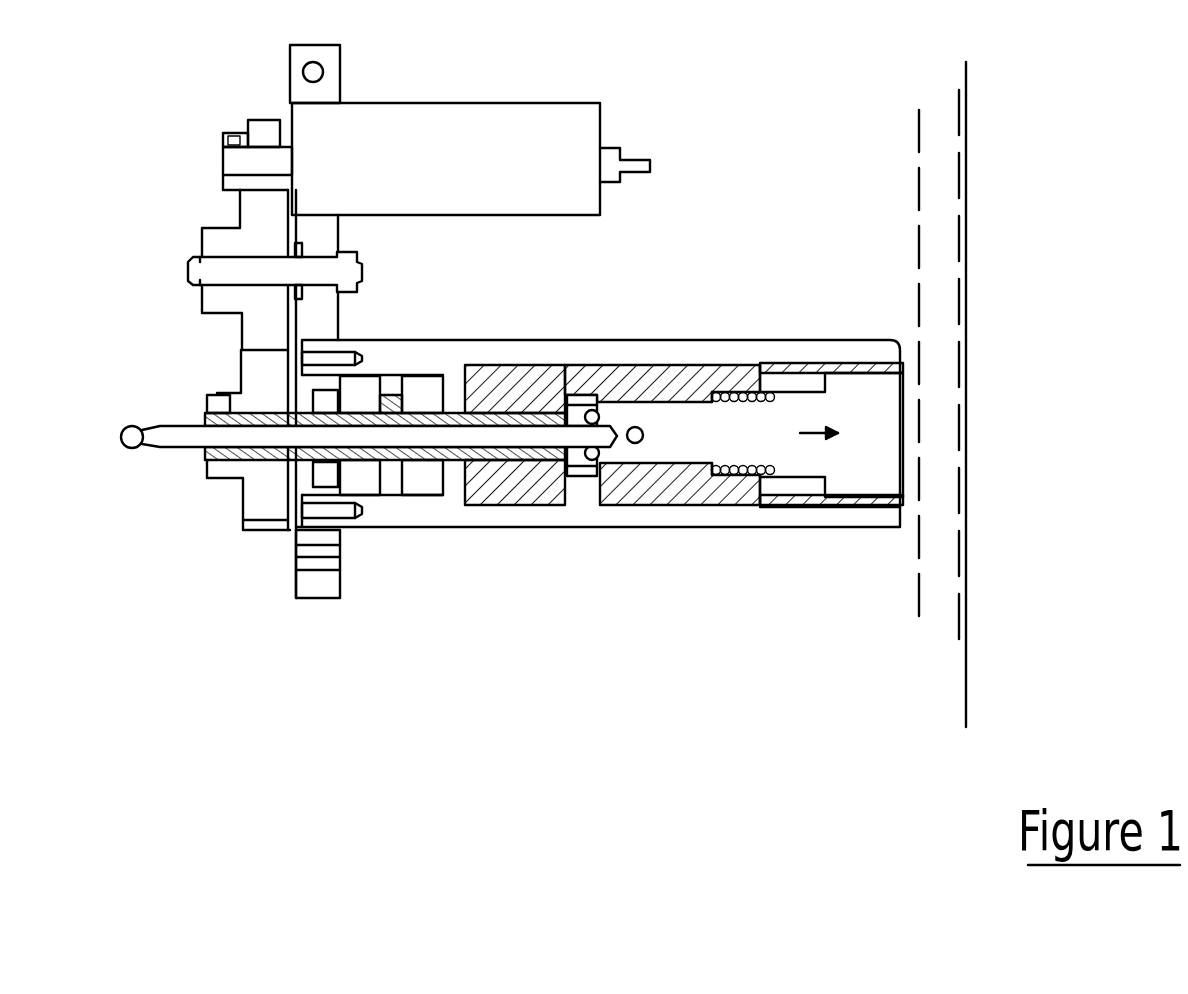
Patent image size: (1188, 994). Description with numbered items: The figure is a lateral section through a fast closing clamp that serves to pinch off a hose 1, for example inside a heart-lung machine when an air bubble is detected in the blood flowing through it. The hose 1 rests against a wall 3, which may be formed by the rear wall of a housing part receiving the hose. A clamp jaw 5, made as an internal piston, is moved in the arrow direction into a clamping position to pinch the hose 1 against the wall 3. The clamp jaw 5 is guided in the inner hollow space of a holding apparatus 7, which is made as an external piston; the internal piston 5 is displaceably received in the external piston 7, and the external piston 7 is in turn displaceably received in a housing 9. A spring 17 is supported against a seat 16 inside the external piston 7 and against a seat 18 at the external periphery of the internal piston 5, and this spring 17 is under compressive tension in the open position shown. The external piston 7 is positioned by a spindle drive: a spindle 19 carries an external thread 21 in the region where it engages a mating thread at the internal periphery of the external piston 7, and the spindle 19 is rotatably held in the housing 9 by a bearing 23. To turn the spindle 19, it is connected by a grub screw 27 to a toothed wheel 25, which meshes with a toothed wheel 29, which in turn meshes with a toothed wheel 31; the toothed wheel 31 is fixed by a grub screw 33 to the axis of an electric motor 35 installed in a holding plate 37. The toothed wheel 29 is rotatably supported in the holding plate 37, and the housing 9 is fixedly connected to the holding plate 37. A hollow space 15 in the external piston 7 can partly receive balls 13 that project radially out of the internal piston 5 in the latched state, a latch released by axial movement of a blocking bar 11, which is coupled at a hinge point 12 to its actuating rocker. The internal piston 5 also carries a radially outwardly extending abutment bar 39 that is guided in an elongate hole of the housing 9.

The hose 1 is at (942, 232).
The wall 3 is at (968, 328).
The clamp jaw 5 is at (867, 477).
The holding apparatus 7 is at (660, 483).
The housing 9 is at (653, 345).
The blocking bar 11 is at (490, 440).
The hinge point 12 is at (125, 445).
The balls 13 is at (595, 385).
The hollow space 15 is at (588, 400).
The seat 16 is at (745, 383).
The spring 17 is at (747, 505).
The seat 18 is at (742, 478).
The spindle 19 is at (396, 450).
The external thread 21 is at (498, 415).
The bearing 23 is at (425, 483).
The toothed wheel 25 is at (253, 508).
The grub screw 27 is at (213, 393).
The toothed wheel 29 is at (250, 318).
The toothed wheel 31 is at (257, 126).
The grub screw 33 is at (233, 130).
The electric motor 35 is at (398, 135).
The holding plate 37 is at (323, 88).
The abutment bar 39 is at (636, 443).